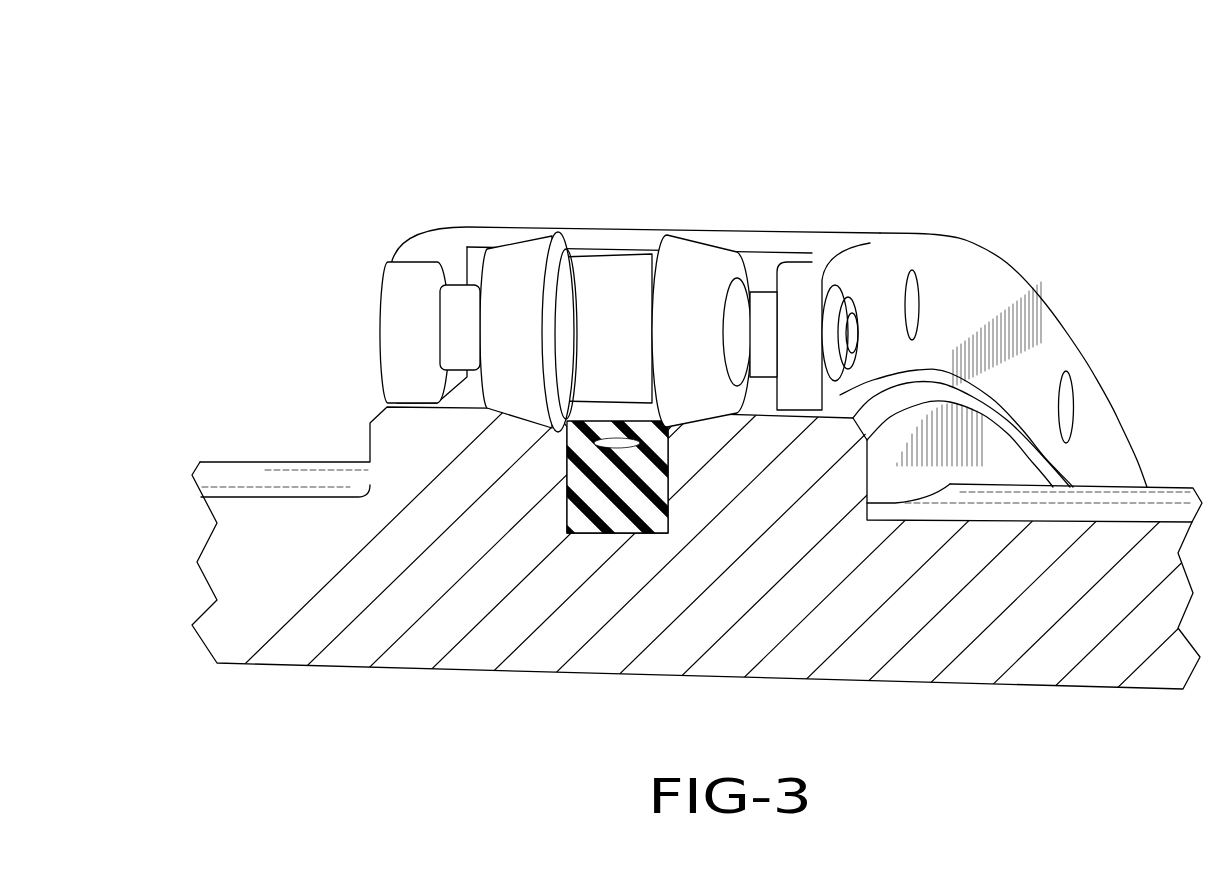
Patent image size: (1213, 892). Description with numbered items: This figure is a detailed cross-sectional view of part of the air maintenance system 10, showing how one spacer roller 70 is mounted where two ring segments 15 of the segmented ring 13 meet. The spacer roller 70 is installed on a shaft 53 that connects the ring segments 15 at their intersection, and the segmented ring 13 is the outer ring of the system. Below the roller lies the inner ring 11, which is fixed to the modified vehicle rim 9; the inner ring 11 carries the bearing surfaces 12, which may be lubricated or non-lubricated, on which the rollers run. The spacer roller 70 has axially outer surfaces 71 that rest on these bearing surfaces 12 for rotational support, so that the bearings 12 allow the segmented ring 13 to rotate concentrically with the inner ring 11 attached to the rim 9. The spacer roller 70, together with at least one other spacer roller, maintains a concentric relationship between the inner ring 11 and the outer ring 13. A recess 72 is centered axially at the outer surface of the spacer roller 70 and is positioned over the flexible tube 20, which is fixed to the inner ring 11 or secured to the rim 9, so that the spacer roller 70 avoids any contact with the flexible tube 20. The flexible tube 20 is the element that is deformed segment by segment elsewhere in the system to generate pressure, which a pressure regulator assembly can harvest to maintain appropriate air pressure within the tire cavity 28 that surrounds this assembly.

The vehicle rim 9 is at (344, 656).
The air maintenance system 10 is at (666, 234).
The inner ring 11 is at (368, 442).
The bearing surfaces 12 is at (525, 407).
The segmented ring 13 is at (1066, 332).
The ring segments 15 is at (770, 240).
The flexible tube 20 is at (610, 533).
The tire cavity 28 is at (696, 259).
The shaft 53 is at (850, 334).
The spacer roller 70 is at (563, 233).
The axially outer surfaces 71 is at (527, 272).
The recess 72 is at (612, 327).